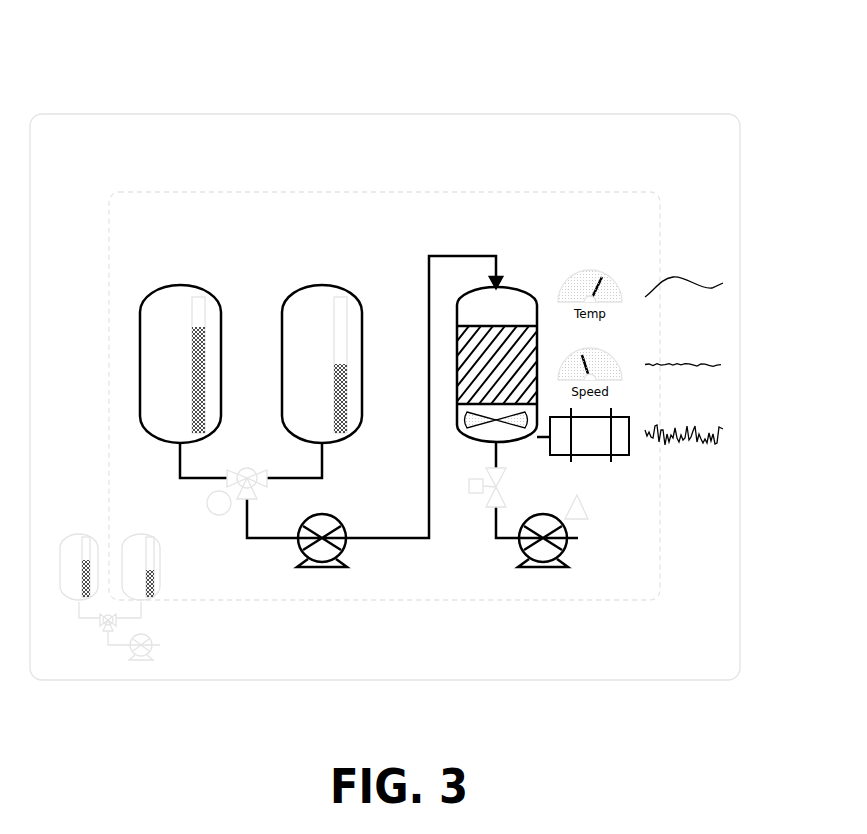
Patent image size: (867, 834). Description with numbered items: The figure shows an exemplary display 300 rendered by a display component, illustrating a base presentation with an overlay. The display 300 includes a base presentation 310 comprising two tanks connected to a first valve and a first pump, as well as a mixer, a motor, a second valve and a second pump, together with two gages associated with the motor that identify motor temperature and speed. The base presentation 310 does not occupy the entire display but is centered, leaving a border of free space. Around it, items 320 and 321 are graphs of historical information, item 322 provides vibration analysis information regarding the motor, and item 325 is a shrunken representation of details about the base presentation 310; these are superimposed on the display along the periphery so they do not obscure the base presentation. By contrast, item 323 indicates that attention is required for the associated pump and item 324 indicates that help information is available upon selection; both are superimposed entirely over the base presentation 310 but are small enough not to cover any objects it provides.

The display 300 is at (701, 63).
The base presentation 310 is at (521, 191).
The item (graph of historical information) 320 is at (706, 269).
The item (graph of historical information) 321 is at (708, 347).
The item (vibration analysis information) 322 is at (718, 414).
The item (attention indicator) 323 is at (589, 504).
The item (help indication) 324 is at (204, 499).
The item (shrunken representation) 325 is at (177, 647).